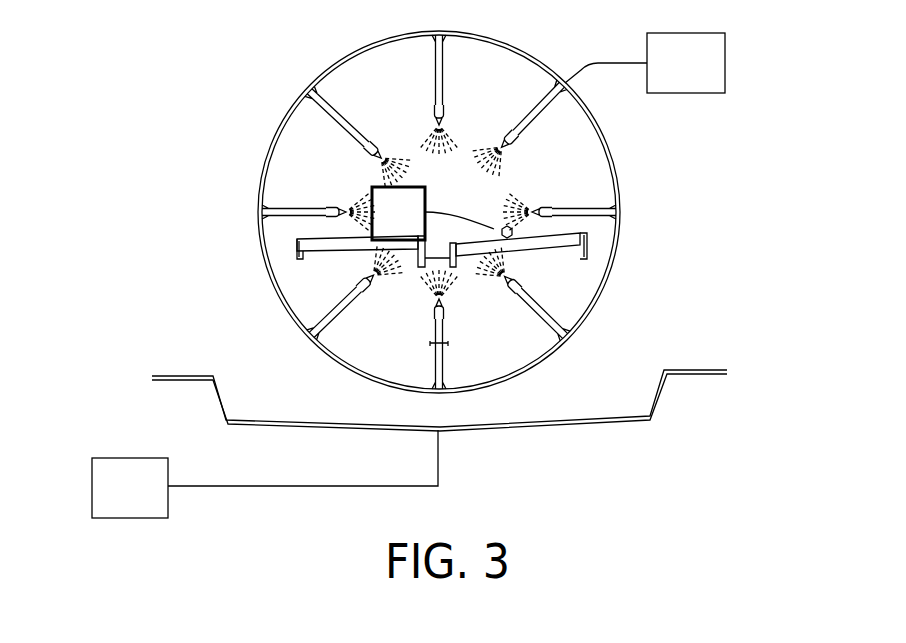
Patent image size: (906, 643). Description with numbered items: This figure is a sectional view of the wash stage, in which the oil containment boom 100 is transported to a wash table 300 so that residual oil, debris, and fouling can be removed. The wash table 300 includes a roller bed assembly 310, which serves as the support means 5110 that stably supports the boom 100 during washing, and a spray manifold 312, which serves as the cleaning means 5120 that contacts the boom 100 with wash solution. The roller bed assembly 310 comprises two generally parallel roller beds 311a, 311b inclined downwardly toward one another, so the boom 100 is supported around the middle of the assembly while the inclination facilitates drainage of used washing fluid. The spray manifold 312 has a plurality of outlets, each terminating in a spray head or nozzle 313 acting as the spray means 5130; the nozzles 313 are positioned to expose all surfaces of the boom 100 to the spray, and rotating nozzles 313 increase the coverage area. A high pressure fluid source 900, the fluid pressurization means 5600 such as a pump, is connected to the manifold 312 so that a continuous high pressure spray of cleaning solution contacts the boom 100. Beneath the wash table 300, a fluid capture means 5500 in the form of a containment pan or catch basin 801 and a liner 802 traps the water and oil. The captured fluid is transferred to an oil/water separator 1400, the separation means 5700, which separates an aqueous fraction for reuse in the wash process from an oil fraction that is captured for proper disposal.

The wash table 300 is at (391, 212).
The oil containment boom 100 is at (371, 189).
The spray head 313 is at (439, 212).
The spray means 5130 is at (442, 108).
The spray manifold 312 is at (391, 212).
The cleaning means 5120 is at (203, 107).
The roller bed 311a is at (317, 247).
The roller bed 311b is at (553, 243).
The roller bed assembly 310 is at (430, 323).
The support means 5110 is at (430, 323).
The catch basin 801 is at (439, 335).
The liner 802 is at (439, 351).
The fluid capture means 5500 is at (695, 369).
The high pressure fluid source 900 is at (645, 112).
The fluid pressurization means 5600 is at (687, 93).
The oil/water separator 1400 is at (255, 442).
The separation means 5700 is at (117, 457).